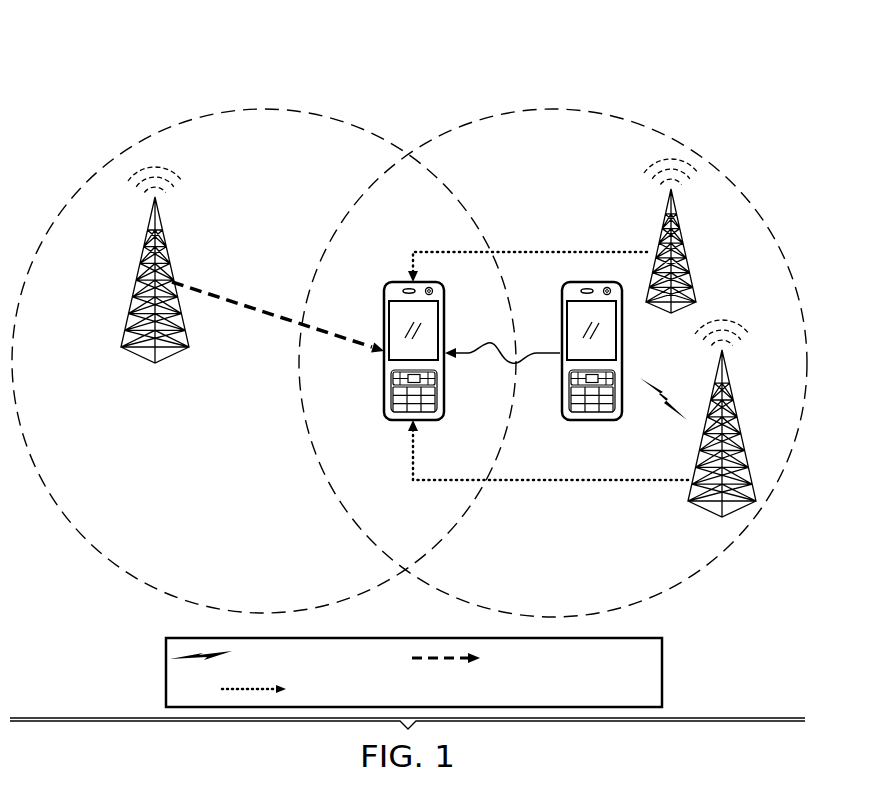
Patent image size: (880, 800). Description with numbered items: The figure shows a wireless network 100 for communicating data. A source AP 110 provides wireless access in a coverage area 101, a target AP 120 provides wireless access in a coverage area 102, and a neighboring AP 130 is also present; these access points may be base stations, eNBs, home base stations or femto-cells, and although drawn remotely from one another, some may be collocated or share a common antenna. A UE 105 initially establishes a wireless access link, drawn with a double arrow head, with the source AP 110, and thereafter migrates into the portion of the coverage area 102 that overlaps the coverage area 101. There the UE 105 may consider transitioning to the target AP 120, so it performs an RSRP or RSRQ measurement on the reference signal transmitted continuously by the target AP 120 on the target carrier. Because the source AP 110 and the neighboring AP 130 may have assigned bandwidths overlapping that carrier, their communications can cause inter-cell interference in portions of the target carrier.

The wireless network 100 is at (344, 62).
The coverage area 101 is at (590, 176).
The coverage area 102 is at (283, 176).
The UE 105 is at (593, 421).
The source AP 110 is at (742, 433).
The target AP 120 is at (140, 281).
The neighboring AP 130 is at (690, 250).